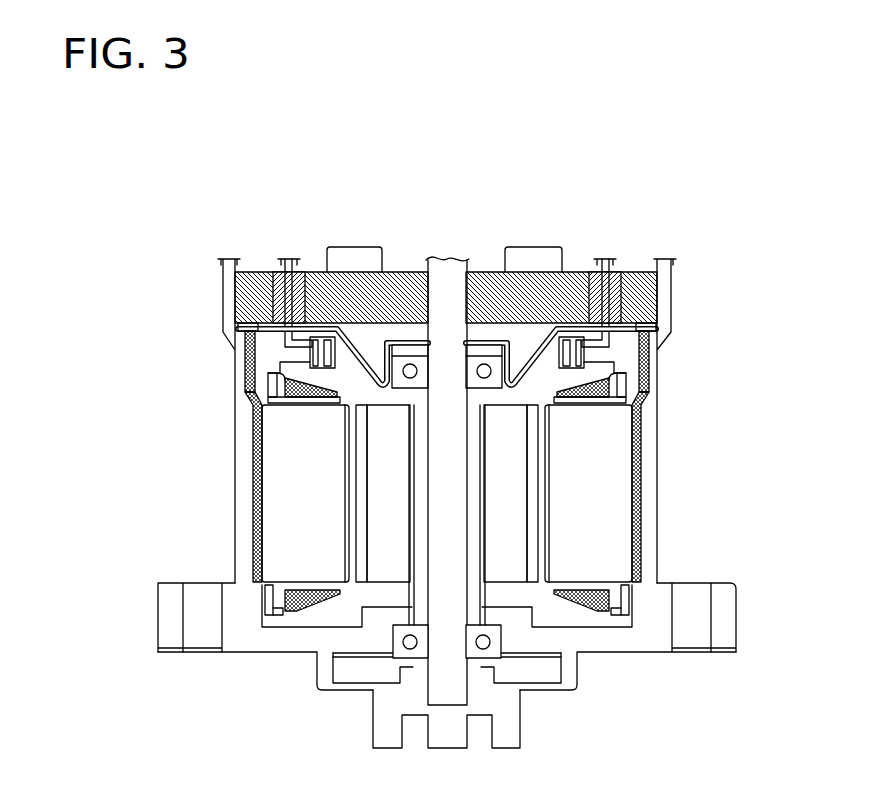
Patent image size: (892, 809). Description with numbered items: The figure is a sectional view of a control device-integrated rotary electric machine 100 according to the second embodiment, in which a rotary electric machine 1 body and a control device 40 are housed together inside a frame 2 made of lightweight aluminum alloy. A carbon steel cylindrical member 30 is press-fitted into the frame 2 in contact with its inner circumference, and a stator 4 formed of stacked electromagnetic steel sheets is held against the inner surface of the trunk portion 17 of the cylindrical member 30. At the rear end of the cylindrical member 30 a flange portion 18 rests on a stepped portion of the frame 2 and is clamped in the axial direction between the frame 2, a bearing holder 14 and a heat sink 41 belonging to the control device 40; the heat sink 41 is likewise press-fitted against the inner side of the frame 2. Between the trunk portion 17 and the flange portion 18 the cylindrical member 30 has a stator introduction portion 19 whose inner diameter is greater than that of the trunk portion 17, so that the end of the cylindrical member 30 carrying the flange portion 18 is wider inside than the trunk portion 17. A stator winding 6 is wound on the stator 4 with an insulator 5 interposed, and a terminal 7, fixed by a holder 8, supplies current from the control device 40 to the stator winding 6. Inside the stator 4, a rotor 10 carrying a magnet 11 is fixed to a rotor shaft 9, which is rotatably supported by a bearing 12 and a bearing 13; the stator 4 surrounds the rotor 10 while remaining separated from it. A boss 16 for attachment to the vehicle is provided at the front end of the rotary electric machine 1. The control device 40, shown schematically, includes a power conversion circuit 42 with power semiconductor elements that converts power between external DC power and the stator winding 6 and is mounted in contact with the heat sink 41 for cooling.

The control device-integrated rotary electric machine 100 is at (350, 187).
The rotary electric machine 1 is at (743, 333).
The frame 2 is at (650, 525).
The stator 4 is at (593, 476).
The insulator 5 is at (657, 397).
The stator winding 6 is at (655, 375).
The terminal 7 is at (593, 363).
The holder 8 is at (657, 363).
The rotor shaft 9 is at (437, 577).
The rotor 10 is at (253, 553).
The magnet 11 is at (363, 463).
The bearing 12 is at (484, 368).
The bearing 13 is at (486, 650).
The bearing holder 14 is at (400, 343).
The boss 16 is at (383, 707).
The trunk portion 17 is at (252, 477).
The flange portion 18 is at (243, 322).
The stator introduction portion 19 is at (247, 357).
The cylindrical member 30 is at (257, 530).
The control device 40 is at (743, 240).
The heat sink 41 is at (317, 280).
The power conversion circuit 42 is at (540, 250).